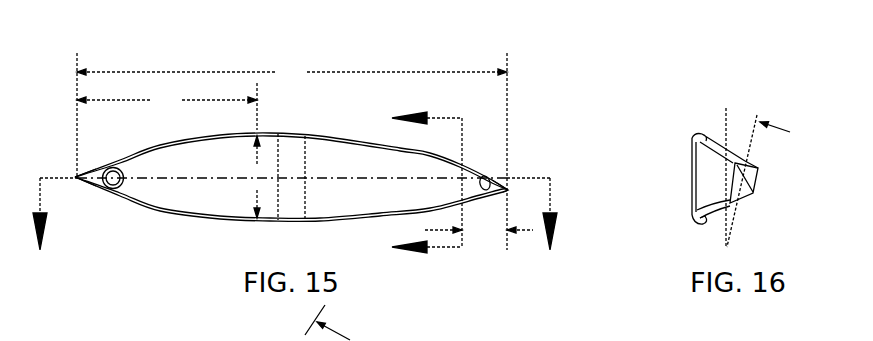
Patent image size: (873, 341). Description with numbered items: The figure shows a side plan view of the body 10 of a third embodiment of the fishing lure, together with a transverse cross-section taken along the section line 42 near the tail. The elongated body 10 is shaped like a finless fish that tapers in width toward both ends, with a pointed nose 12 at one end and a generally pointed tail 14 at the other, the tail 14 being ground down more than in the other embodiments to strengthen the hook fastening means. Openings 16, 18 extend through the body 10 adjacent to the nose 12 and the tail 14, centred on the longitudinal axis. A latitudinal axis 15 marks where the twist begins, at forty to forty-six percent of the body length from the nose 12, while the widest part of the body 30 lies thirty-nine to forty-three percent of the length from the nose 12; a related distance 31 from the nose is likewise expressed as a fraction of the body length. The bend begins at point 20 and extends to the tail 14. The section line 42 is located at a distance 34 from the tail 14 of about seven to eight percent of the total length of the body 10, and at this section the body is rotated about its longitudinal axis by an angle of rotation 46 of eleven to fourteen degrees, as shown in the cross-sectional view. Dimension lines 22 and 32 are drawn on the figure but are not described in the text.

In FIG. 15, the elongated body 10 is at (150, 257).
In FIG. 15, the pointed nose 12 is at (77, 179).
In FIG. 15, the generally pointed tail 14 is at (510, 183).
In FIG. 15, the latitudinal axis 15 is at (275, 222).
In FIG. 15, the opening 16 is at (110, 167).
In FIG. 15, the opening 18 is at (492, 175).
In FIG. 15, the bend start 20 is at (307, 222).
In FIG. 15, the direction arrows 22 is at (295, 229).
In FIG. 15, the widest part of the body 30 is at (257, 177).
In FIG. 15, the distance from the nose 31 is at (167, 100).
In FIG. 15, the chord length 32 is at (292, 72).
In FIG. 15, the distance from the tail 34 is at (479, 230).
In FIG. 15, the cross-section line 42 is at (411, 179).
In FIG. 16, the angle of rotation of the twist 46 is at (727, 117).